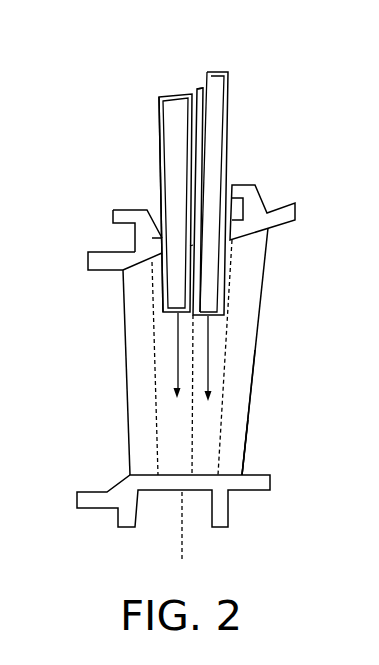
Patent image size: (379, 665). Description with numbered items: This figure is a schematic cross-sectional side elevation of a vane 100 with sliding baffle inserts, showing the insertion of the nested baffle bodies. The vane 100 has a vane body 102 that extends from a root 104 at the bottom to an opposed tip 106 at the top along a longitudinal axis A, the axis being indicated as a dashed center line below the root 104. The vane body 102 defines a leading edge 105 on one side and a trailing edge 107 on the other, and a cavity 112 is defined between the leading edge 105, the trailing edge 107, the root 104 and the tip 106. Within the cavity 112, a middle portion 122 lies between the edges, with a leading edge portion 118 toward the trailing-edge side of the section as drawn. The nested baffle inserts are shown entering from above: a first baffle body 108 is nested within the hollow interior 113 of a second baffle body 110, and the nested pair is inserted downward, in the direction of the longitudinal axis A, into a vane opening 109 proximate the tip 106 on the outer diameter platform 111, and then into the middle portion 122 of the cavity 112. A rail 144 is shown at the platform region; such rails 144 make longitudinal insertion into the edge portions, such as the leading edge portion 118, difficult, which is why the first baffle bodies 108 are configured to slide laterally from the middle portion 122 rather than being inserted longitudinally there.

The vane 100 is at (283, 193).
The vane body 102 is at (256, 323).
The root 104 is at (130, 475).
The leading edge 105 is at (127, 382).
The tip 106 is at (126, 285).
The trailing edge 107 is at (251, 386).
The first baffle body 108 is at (231, 73).
The vane opening 109 is at (160, 237).
The second baffle body 110 is at (234, 107).
The outer diameter platform 111 is at (113, 252).
The cavity 112 is at (223, 418).
The hollow interior 113 is at (198, 80).
The leading edge portion 118 is at (309, 447).
The middle portion 122 is at (170, 408).
The rail 144 is at (256, 183).
The longitudinal axis A is at (183, 533).